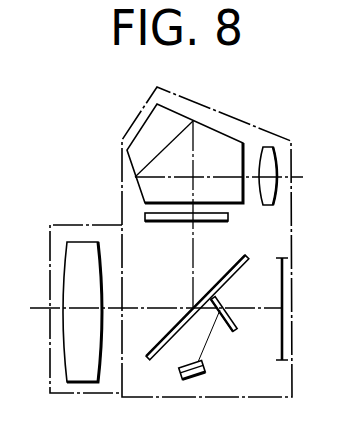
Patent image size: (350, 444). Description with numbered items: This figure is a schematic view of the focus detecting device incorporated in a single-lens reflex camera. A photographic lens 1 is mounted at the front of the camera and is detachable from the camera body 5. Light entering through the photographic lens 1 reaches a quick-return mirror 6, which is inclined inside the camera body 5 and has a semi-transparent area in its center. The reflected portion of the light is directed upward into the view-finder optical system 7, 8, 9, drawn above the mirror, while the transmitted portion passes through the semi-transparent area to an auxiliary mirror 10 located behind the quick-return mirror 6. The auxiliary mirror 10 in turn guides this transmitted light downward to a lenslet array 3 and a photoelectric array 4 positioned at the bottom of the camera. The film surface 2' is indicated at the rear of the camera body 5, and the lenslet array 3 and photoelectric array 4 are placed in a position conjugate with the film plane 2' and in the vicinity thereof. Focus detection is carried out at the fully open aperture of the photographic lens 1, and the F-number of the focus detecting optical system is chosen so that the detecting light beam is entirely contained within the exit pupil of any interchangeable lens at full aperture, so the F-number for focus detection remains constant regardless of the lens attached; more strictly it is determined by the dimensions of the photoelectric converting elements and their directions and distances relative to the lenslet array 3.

The photographic lens 1 is at (78, 358).
The film surface 2' is at (267, 287).
The lenslet array 3 is at (223, 379).
The photoelectric array 4 is at (204, 381).
The camera body 5 is at (292, 195).
The quick-return mirror 6 is at (165, 343).
The view-finder optical system element 7 is at (153, 222).
The view-finder optical system element 8 is at (218, 152).
The view-finder optical system element 9 is at (268, 155).
The auxiliary mirror 10 is at (235, 331).